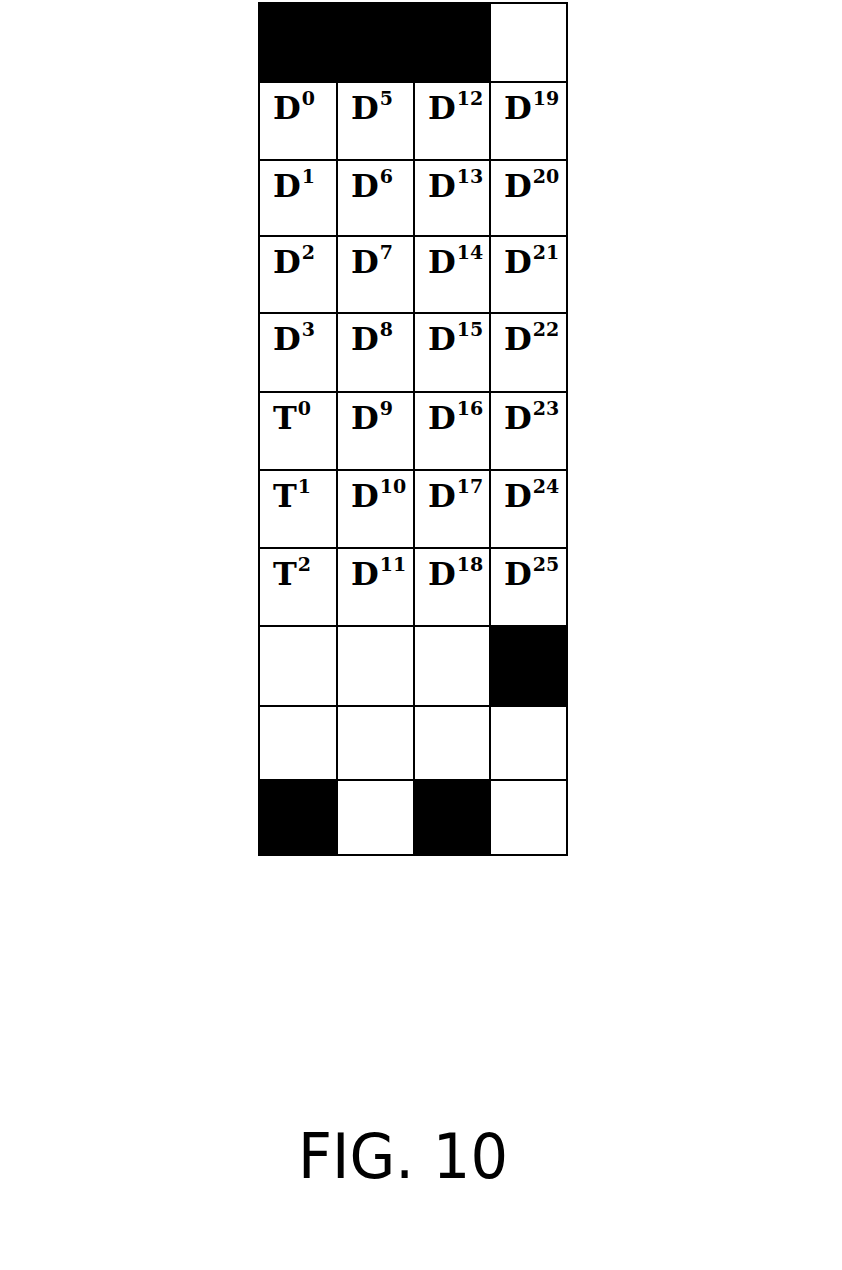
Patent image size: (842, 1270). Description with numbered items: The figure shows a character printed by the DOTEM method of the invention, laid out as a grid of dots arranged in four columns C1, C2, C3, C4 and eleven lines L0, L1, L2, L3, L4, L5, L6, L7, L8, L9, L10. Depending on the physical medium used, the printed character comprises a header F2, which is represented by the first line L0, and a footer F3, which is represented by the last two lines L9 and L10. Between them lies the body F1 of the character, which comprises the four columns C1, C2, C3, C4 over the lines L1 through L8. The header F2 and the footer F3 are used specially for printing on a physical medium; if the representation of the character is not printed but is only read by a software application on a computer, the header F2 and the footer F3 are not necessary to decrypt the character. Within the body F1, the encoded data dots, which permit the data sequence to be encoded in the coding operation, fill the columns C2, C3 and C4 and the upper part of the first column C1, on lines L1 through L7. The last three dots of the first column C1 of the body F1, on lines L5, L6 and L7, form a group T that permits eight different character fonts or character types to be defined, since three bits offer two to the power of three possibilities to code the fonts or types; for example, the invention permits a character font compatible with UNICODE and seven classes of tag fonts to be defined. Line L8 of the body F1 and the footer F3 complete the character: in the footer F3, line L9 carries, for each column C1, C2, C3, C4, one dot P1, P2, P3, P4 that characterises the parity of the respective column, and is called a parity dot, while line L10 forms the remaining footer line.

The line 0 L0 is at (330, 42).
The line 1 L1 is at (330, 121).
The line 2 L2 is at (330, 198).
The line 3 L3 is at (330, 274).
The line 4 L4 is at (330, 352).
The line 5 L5 is at (330, 431).
The line 6 L6 is at (330, 509).
The line 7 L7 is at (330, 587).
The line 8 L8 is at (330, 666).
The line 9 L9 is at (330, 743).
The line 10 L10 is at (327, 817).
The column 1 C1 is at (294, 878).
The column 2 C2 is at (369, 878).
The column 3 C3 is at (449, 878).
The column 4 C4 is at (529, 878).
The parity dot P1 is at (298, 732).
The parity dot P2 is at (375, 732).
The parity dot P3 is at (452, 732).
The parity dot P4 is at (528, 732).
The body F1 is at (567, 84).
The header F2 is at (567, 5).
The footer F3 is at (567, 708).
The timing cells group T is at (260, 385).